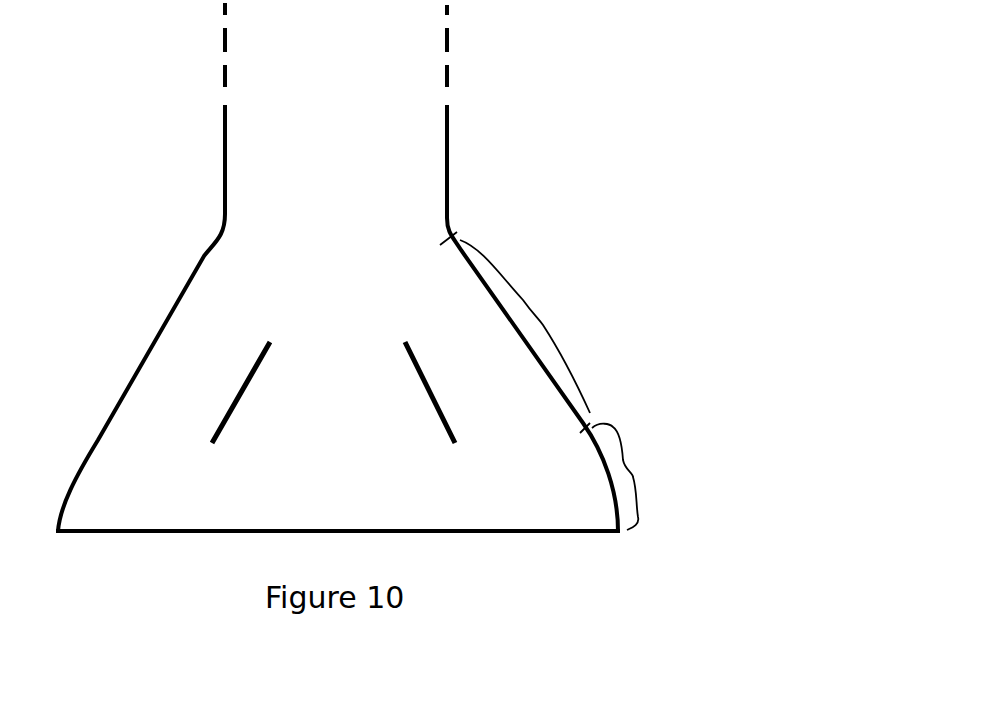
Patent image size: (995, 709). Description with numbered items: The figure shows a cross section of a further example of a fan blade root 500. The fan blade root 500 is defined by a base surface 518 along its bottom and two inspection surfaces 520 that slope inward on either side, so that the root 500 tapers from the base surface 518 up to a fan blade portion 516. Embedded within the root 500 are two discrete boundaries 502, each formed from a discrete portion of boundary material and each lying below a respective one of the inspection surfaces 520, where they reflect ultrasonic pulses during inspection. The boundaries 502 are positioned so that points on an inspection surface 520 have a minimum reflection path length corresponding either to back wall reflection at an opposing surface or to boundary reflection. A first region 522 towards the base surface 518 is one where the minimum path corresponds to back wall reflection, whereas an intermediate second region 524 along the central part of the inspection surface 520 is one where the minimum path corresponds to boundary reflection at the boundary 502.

The fan blade portion 516 is at (411, 302).
The inspection surfaces 520 is at (160, 326).
The base surface 518 is at (183, 533).
The fan blade root 500 is at (604, 318).
The second region 524 is at (553, 318).
The first region 522 is at (643, 473).
The discrete boundaries 502 is at (228, 414).